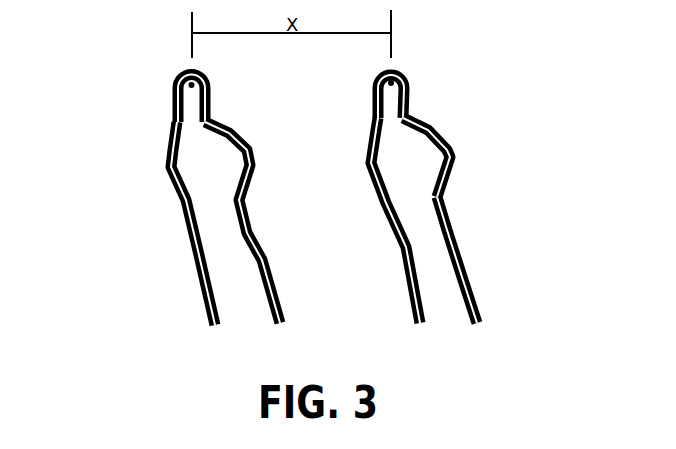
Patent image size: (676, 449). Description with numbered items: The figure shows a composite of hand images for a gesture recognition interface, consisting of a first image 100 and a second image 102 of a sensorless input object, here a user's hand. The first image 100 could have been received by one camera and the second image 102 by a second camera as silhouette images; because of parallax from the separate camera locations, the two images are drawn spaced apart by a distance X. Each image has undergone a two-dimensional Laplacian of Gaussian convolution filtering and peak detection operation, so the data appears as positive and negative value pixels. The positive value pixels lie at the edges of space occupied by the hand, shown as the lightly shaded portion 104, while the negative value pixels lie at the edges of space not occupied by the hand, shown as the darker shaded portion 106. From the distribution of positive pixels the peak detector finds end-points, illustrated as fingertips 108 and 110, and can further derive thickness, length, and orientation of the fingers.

The first image 100 is at (201, 178).
The second image 102 is at (471, 196).
The lightly shaded portion 104 is at (466, 327).
The darker shaded portion 106 is at (280, 252).
The fingertip 108 is at (178, 58).
The fingertip 110 is at (405, 55).